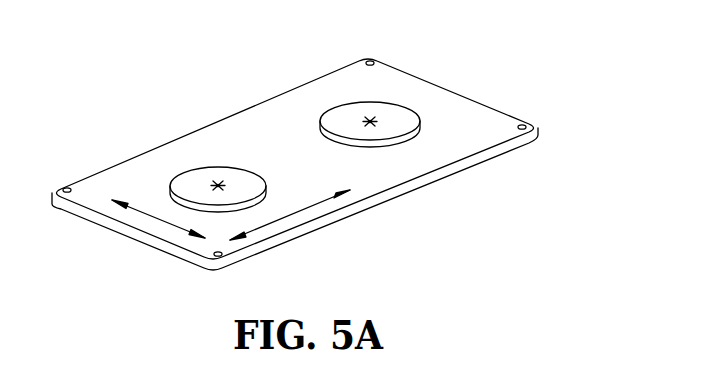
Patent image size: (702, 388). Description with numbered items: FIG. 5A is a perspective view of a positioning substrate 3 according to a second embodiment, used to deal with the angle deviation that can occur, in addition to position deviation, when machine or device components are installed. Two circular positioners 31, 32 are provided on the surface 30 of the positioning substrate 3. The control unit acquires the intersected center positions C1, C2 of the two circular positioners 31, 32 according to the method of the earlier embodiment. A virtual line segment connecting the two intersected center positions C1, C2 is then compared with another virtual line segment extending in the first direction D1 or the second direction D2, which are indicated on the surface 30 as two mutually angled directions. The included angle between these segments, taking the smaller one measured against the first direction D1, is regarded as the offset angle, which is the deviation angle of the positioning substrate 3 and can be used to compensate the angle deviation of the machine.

The positioning substrate 3 is at (310, 143).
The surface 30 is at (470, 113).
The circular positioner 31 is at (195, 128).
The circular positioner 32 is at (366, 74).
The intersected center position C1 is at (218, 180).
The intersected center position C2 is at (372, 120).
The first direction D1 is at (290, 215).
The second direction D2 is at (158, 219).